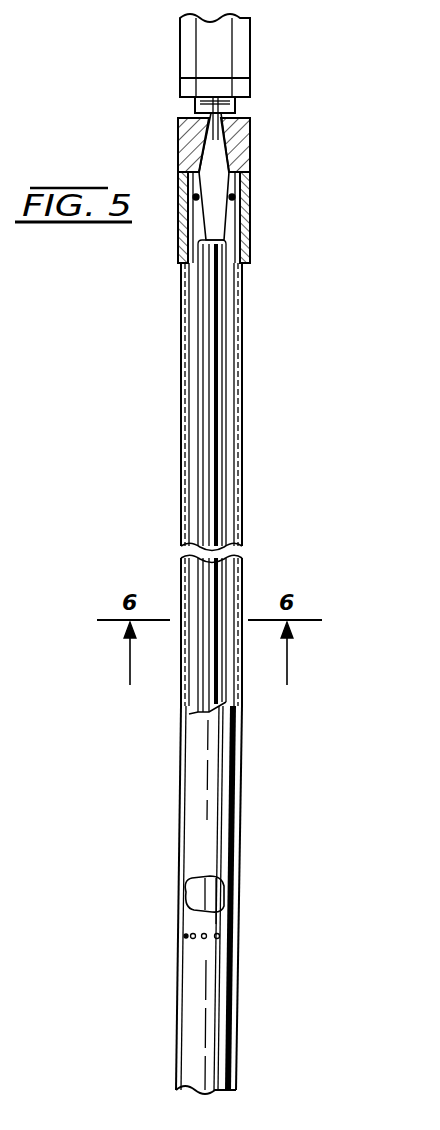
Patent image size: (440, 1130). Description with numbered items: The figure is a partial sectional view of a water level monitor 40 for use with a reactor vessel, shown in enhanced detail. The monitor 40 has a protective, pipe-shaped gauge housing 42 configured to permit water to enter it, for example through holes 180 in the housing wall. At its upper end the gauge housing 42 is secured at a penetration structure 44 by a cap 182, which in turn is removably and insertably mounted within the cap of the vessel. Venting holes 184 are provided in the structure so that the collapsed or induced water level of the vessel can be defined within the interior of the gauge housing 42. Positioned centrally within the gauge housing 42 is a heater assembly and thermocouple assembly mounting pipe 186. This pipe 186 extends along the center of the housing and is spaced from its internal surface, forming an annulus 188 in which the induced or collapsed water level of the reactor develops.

The monitor 40 is at (286, 474).
The gauge housing 42 is at (242, 517).
The penetration structure 44 is at (280, 255).
The holes 180 is at (186, 940).
The cap 182 is at (250, 160).
The venting holes 184 is at (238, 190).
The heater assembly and thermocouple assembly mounting pipe 186 is at (224, 334).
The annulus 188 is at (228, 397).